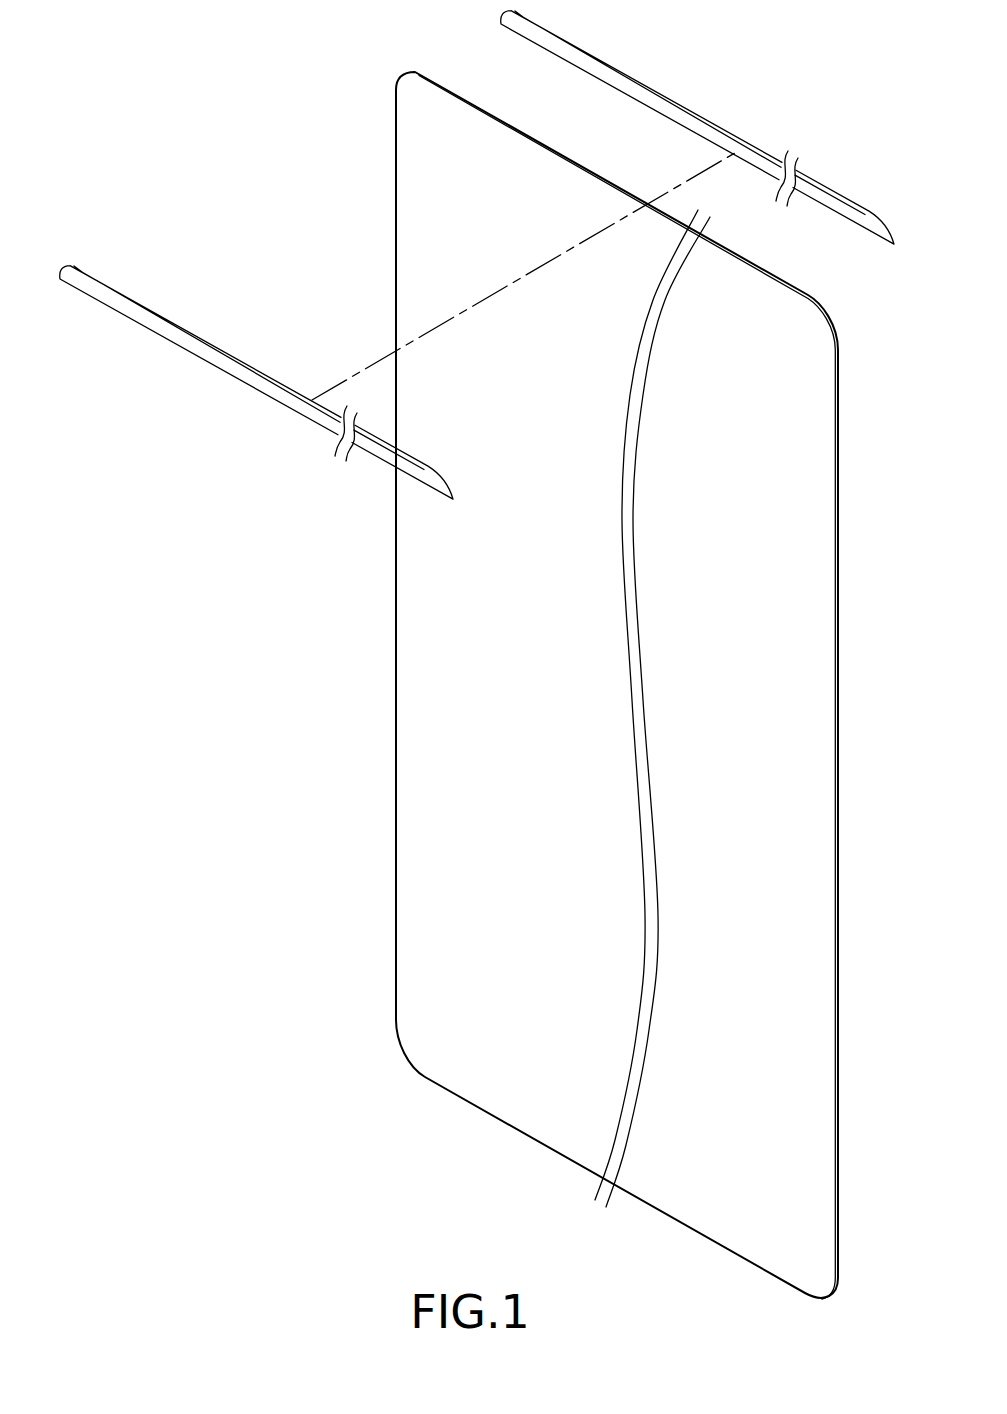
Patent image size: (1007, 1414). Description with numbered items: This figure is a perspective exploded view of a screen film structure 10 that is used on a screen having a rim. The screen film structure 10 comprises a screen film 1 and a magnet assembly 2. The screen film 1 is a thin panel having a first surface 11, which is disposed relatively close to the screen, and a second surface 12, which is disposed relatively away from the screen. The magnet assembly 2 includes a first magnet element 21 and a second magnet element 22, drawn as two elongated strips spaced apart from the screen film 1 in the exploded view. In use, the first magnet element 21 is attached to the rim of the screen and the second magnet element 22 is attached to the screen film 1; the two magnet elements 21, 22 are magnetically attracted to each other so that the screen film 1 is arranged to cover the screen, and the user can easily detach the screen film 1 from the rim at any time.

The screen film structure 10 is at (195, 116).
The screen film 1 is at (596, 685).
The first surface 11 is at (793, 437).
The second surface 12 is at (840, 380).
The magnet assembly 2 is at (477, 257).
The first magnet element 21 is at (145, 317).
The second magnet element 22 is at (703, 121).